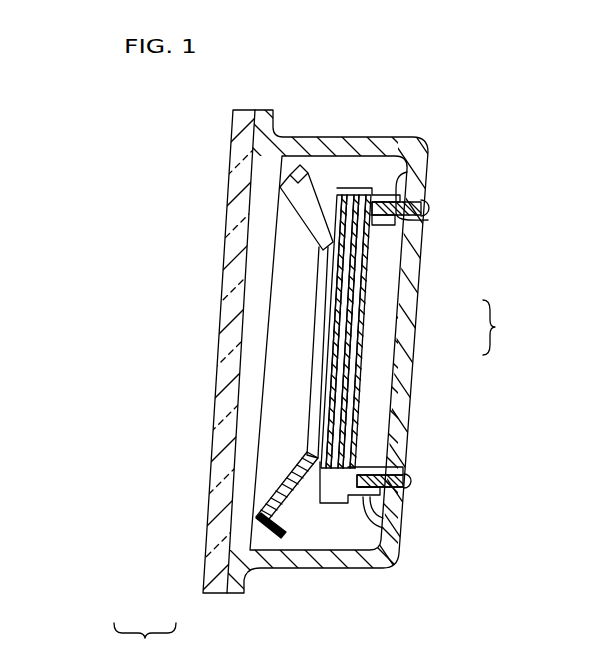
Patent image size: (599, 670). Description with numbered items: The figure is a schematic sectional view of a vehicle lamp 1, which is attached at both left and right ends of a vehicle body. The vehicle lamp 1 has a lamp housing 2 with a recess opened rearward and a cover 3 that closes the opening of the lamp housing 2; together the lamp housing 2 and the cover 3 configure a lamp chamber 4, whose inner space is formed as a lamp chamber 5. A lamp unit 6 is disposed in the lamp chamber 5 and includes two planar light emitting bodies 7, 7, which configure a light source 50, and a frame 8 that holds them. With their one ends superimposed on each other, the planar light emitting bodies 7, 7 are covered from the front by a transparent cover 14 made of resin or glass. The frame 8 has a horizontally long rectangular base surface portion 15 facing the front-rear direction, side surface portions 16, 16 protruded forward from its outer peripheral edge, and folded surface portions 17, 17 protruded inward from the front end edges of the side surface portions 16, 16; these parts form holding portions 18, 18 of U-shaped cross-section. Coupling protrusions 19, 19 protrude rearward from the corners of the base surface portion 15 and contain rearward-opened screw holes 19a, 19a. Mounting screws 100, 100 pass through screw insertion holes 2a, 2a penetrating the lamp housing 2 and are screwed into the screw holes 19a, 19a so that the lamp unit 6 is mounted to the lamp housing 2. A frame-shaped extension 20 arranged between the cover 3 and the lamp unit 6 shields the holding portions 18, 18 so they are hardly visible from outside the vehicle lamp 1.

The vehicle lamp 1 is at (62, 133).
The lamp housing 2 is at (241, 586).
The screw insertion hole 2a is at (410, 193).
The cover 3 is at (207, 527).
The lamp chamber 4 is at (145, 645).
The lamp chamber 5 is at (274, 188).
The lamp unit 6 is at (405, 162).
The planar light emitting body 7 is at (353, 302).
The frame 8 is at (370, 190).
The transparent cover 14 is at (333, 392).
The base surface portion 15 is at (370, 260).
The side surface portion 16 is at (360, 196).
The folded surface portion 17 is at (341, 206).
The holding portion 18 is at (346, 195).
The coupling protrusion 19 is at (408, 177).
The screw hole 19a is at (412, 238).
The extension 20 is at (293, 168).
The light source 50 is at (500, 327).
The mounting screw 100 is at (433, 209).